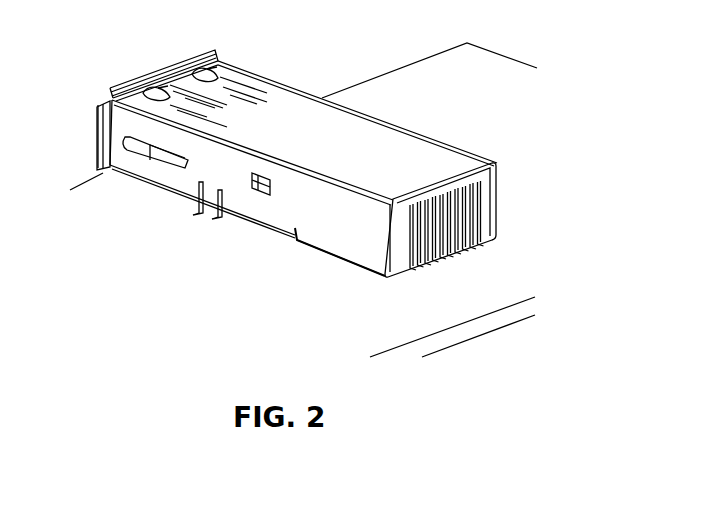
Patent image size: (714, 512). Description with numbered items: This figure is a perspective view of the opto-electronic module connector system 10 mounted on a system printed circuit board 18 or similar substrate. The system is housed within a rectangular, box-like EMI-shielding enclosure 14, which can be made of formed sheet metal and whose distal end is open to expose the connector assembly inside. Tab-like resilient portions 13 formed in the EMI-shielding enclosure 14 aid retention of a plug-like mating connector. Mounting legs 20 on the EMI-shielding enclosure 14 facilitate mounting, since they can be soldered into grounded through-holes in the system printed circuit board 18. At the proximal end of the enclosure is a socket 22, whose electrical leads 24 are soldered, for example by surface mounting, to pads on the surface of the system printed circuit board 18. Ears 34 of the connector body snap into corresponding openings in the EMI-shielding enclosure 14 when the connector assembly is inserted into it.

The opto-electronic module connector system 10 is at (295, 62).
The resilient portions 13 is at (160, 93).
The EMI-shielding enclosure 14 is at (173, 64).
The system printed circuit board 18 is at (423, 62).
The mounting legs 20 is at (207, 212).
The socket 22 is at (487, 185).
The electrical leads 24 is at (448, 255).
The ears 34 is at (253, 190).